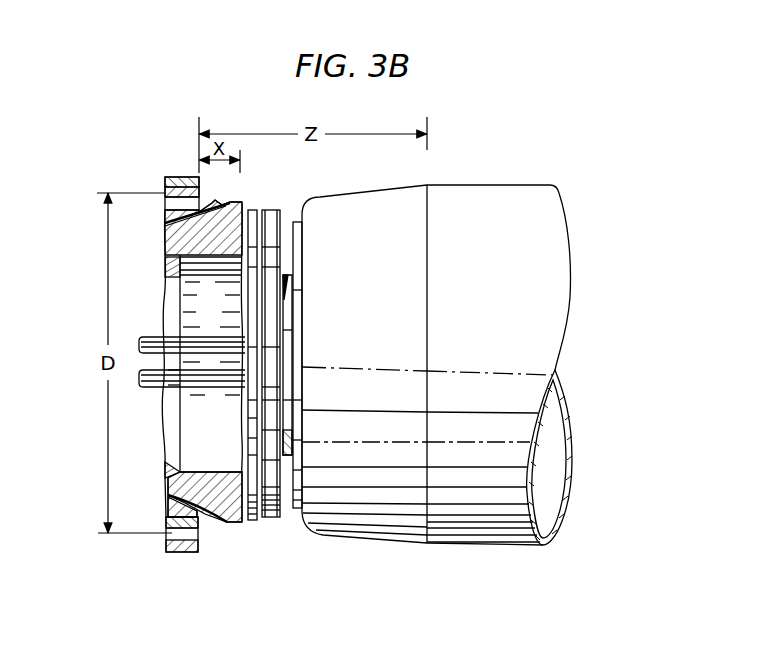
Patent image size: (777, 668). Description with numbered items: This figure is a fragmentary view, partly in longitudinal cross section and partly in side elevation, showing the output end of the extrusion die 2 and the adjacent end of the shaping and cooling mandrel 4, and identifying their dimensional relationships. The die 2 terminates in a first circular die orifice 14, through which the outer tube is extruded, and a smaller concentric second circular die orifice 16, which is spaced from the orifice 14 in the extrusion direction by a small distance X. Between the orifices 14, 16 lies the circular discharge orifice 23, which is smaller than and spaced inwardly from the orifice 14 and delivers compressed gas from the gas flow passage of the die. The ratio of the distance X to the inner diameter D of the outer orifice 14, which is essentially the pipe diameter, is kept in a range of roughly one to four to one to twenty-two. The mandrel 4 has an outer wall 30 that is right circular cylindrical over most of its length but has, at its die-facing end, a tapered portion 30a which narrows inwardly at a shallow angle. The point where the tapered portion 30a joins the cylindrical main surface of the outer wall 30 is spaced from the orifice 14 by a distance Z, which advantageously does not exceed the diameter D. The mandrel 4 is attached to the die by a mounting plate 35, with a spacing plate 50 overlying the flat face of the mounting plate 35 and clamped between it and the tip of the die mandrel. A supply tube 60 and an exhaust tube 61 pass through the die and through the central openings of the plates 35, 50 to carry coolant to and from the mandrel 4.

The die 2 is at (173, 557).
The shaping and cooling mandrel 4 is at (573, 299).
The first circular die orifice 14 is at (201, 530).
The second circular die orifice 16 is at (237, 522).
The circular discharge orifice 23 is at (203, 523).
The outer wall 30 is at (505, 545).
The tapered portion 30a is at (382, 544).
The mounting plate 35 is at (281, 308).
The spacing plate 50 is at (243, 390).
The supply tube 60 is at (213, 335).
The exhaust tube 61 is at (150, 390).